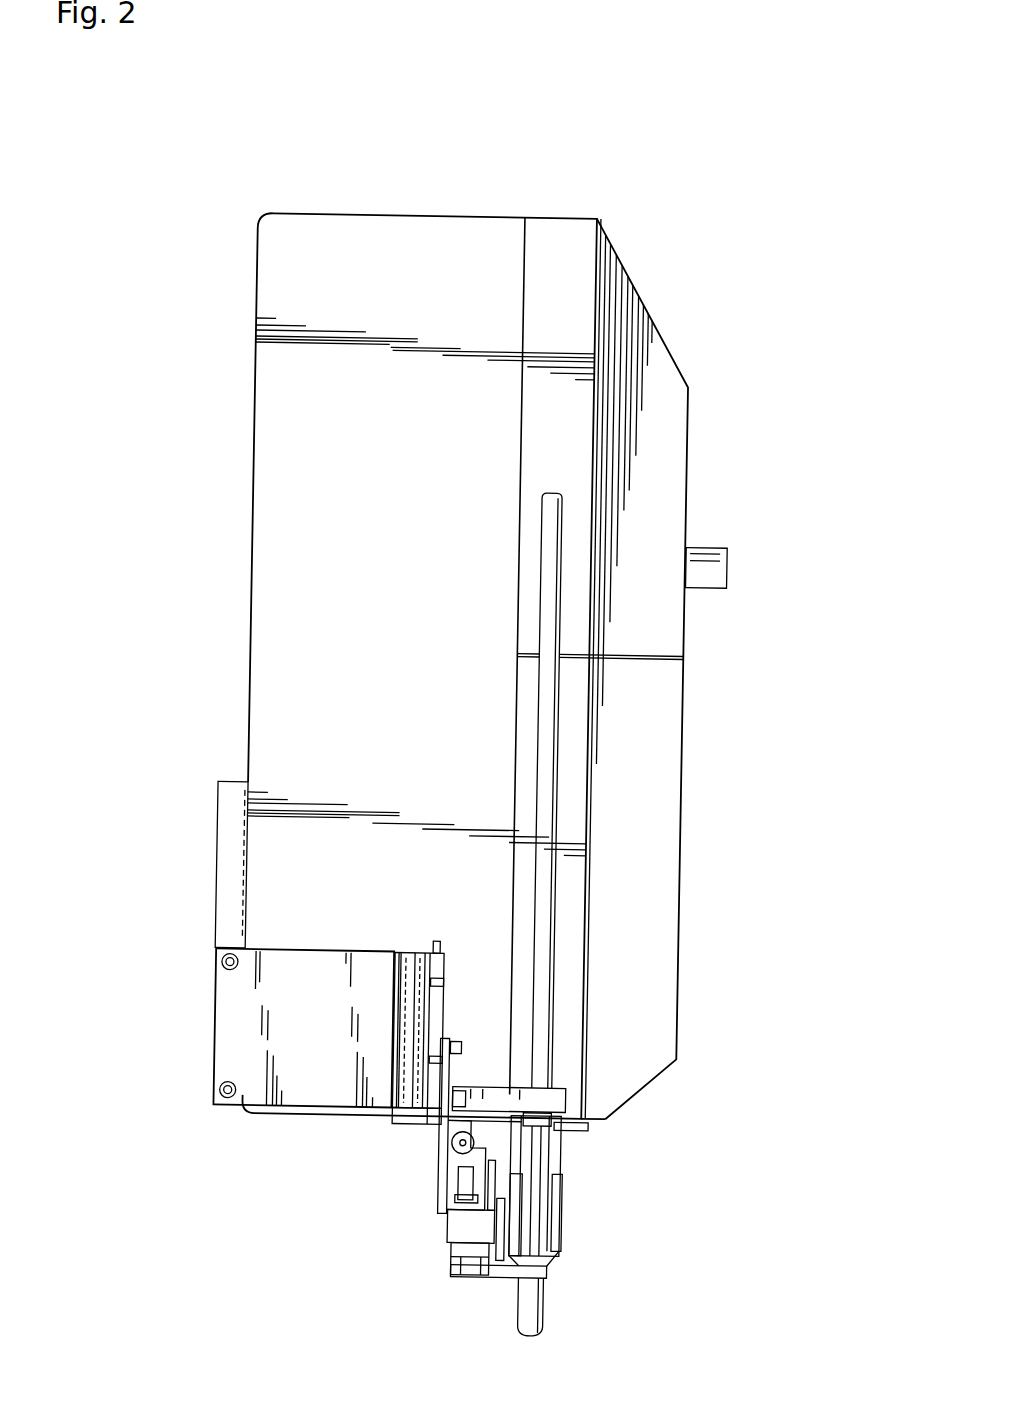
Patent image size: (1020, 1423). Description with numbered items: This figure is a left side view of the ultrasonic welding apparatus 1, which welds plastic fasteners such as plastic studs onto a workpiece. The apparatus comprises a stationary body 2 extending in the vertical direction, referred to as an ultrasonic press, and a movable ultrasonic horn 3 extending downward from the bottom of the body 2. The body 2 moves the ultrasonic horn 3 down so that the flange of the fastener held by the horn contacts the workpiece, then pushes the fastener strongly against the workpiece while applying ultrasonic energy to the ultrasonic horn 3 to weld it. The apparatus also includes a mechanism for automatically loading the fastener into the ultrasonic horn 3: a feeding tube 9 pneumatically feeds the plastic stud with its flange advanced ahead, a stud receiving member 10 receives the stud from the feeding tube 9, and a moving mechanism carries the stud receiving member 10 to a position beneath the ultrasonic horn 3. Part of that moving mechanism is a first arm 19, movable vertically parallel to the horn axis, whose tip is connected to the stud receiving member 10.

The ultrasonic welding apparatus 1 is at (697, 317).
The stationary body 2 is at (320, 460).
The ultrasonic horn 3 is at (530, 1303).
The feeding tube 9 is at (543, 742).
The stud receiving member 10 is at (536, 1270).
The first arm 19 is at (478, 1272).